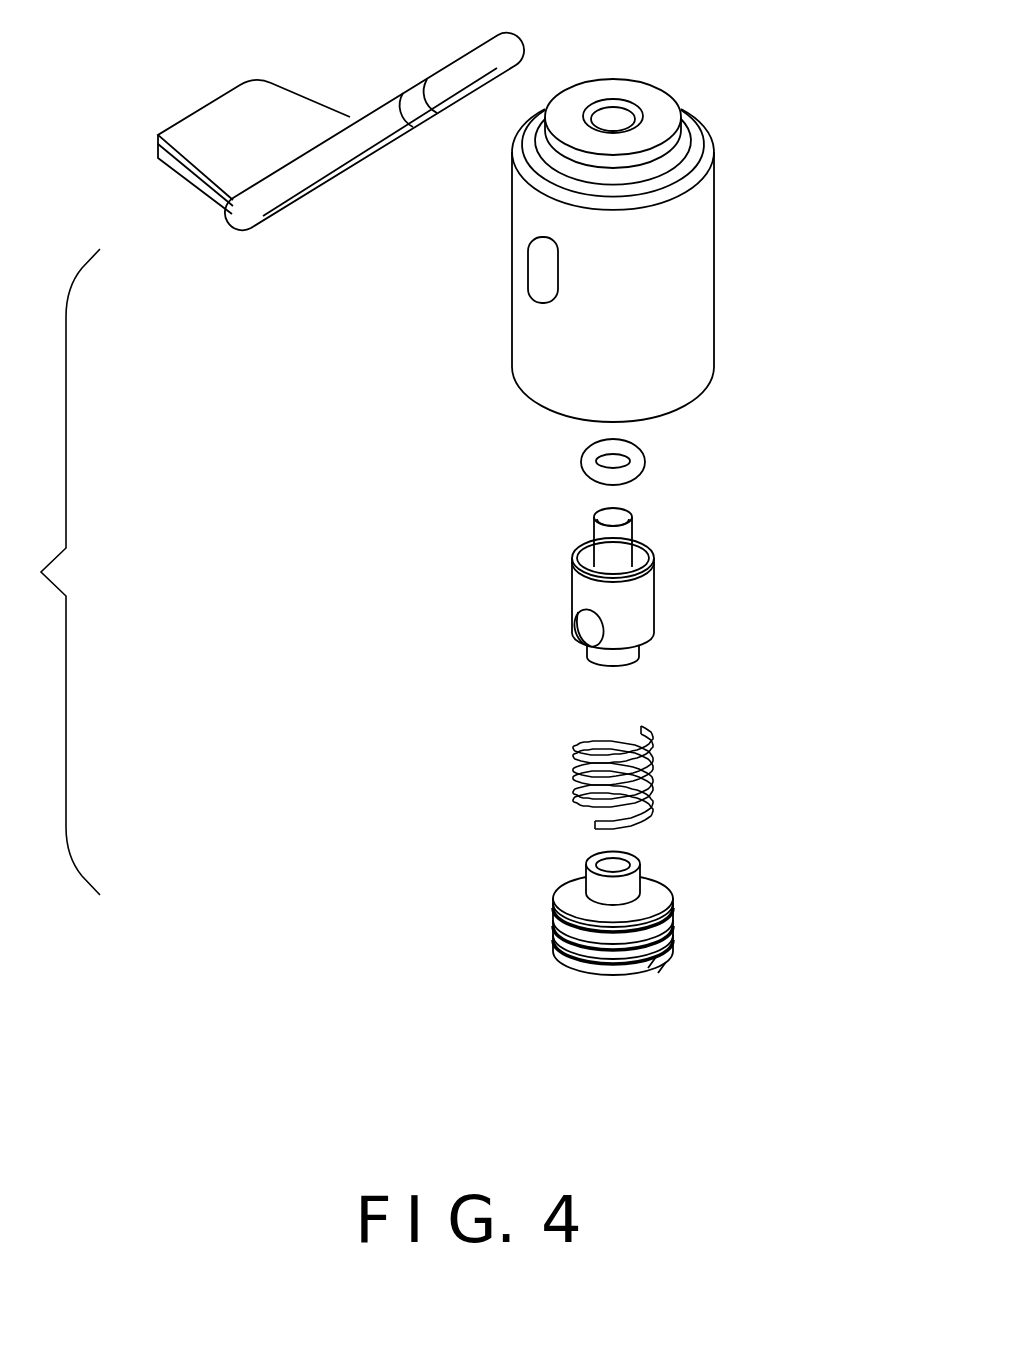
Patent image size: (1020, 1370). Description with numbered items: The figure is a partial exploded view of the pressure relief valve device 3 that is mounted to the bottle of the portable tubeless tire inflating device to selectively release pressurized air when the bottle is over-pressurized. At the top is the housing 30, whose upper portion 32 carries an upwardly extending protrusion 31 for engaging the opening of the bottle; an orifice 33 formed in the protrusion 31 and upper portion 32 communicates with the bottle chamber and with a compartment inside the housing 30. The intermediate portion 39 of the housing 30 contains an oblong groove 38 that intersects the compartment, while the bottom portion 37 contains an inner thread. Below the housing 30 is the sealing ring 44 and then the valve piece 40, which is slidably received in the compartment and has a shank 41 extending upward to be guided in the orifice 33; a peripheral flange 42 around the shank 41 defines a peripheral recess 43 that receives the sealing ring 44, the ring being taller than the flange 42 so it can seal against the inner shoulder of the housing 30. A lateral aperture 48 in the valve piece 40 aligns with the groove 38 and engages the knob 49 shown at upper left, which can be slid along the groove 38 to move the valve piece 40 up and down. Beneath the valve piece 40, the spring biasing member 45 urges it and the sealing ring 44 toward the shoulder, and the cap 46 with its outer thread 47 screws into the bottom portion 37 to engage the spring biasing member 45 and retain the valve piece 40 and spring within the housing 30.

The pressure relief valve device 3 is at (698, 106).
The housing 30 is at (695, 218).
The protrusion 31 is at (660, 100).
The upper portion 32 is at (528, 144).
The orifice 33 is at (615, 118).
The bottom portion 37 is at (672, 392).
The groove 38 is at (538, 290).
The intermediate portion 39 is at (692, 303).
The valve piece 40 is at (640, 618).
The shank 41 is at (622, 535).
The peripheral flange 42 is at (573, 555).
The peripheral recess 43 is at (640, 560).
The sealing ring 44 is at (583, 462).
The spring biasing member 45 is at (643, 780).
The cap 46 is at (575, 892).
The outer thread 47 is at (665, 922).
The aperture 48 is at (573, 627).
The knob 49 is at (243, 215).